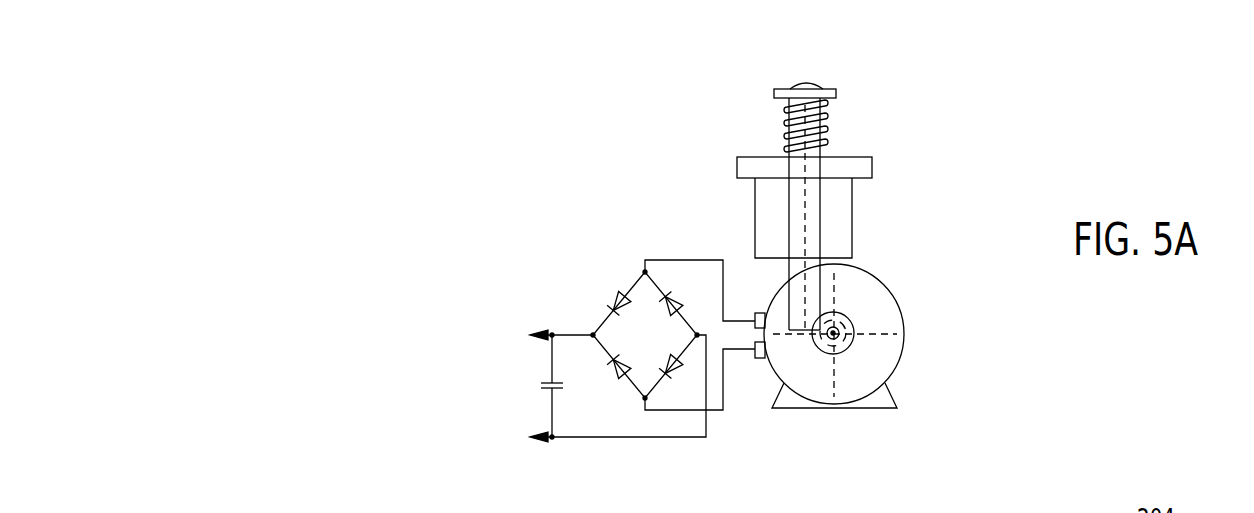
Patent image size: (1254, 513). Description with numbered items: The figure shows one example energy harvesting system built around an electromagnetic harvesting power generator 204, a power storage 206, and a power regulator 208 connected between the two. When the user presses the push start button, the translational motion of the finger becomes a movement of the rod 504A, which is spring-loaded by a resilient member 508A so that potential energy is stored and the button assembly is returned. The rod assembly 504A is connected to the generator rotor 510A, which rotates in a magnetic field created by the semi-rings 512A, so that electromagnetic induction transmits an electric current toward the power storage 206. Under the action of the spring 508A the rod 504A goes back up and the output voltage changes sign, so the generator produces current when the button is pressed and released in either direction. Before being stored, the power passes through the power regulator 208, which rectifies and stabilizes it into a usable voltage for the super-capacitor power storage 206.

The harvesting power generator 204 is at (1071, 138).
The power storage 206 is at (545, 389).
The power regulator 208 is at (686, 438).
The rod 504A is at (774, 96).
The resilient member 508A is at (826, 139).
The generator rotor 510A is at (855, 325).
The semi-rings 512A is at (885, 283).